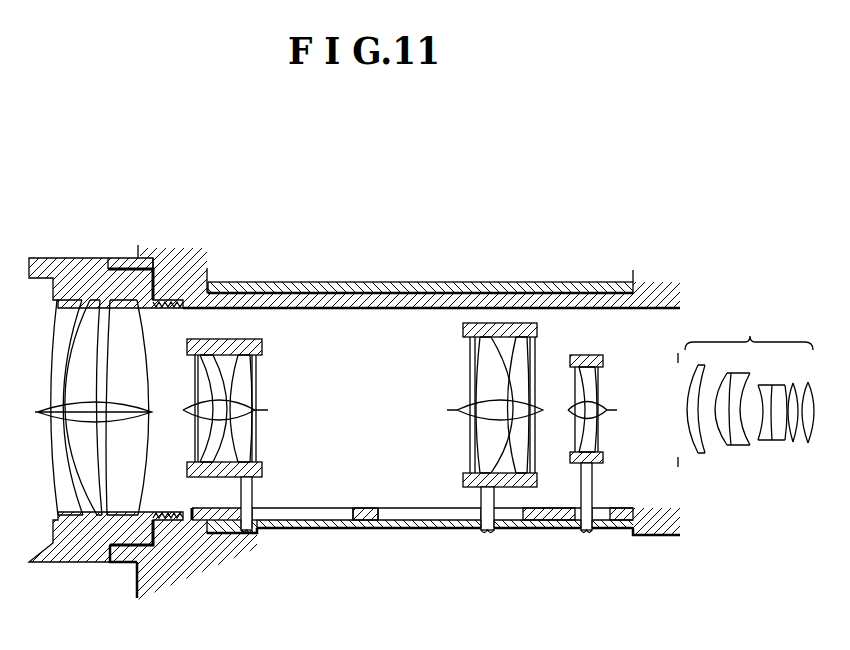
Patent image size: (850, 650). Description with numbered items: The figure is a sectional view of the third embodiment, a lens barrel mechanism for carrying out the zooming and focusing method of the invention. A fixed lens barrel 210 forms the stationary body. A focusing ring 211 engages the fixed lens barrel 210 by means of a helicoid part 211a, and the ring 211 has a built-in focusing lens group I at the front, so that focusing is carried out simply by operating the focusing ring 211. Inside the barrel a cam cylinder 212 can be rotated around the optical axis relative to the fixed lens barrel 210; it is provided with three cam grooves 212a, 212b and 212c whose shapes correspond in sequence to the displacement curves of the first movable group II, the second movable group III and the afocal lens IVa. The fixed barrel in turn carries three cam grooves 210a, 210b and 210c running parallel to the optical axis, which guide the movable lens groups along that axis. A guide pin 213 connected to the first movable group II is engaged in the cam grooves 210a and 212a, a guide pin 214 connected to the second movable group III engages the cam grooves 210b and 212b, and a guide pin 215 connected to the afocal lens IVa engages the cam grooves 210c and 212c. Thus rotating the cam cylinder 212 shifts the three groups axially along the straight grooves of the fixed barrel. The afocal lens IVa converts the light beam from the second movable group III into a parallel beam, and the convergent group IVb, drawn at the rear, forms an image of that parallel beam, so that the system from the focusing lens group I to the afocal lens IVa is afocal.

The fixed lens barrel 210 is at (177, 285).
The cam groove 210a is at (314, 512).
The cam groove 210b is at (427, 512).
The cam groove 210c is at (604, 512).
The focusing ring 211 is at (93, 270).
The helicoid part 211a is at (172, 309).
The cam cylinder 212 is at (401, 286).
The cam groove 212a is at (262, 531).
The cam groove 212b is at (505, 531).
The cam groove 212c is at (576, 531).
The guide pin 213 is at (247, 492).
The guide pin 214 is at (484, 486).
The guide pin 215 is at (588, 488).
The focusing lens group I is at (84, 407).
The first movable group II is at (237, 408).
The second movable group III is at (484, 405).
The afocal lens IVa is at (608, 409).
The convergent group IVb is at (746, 383).